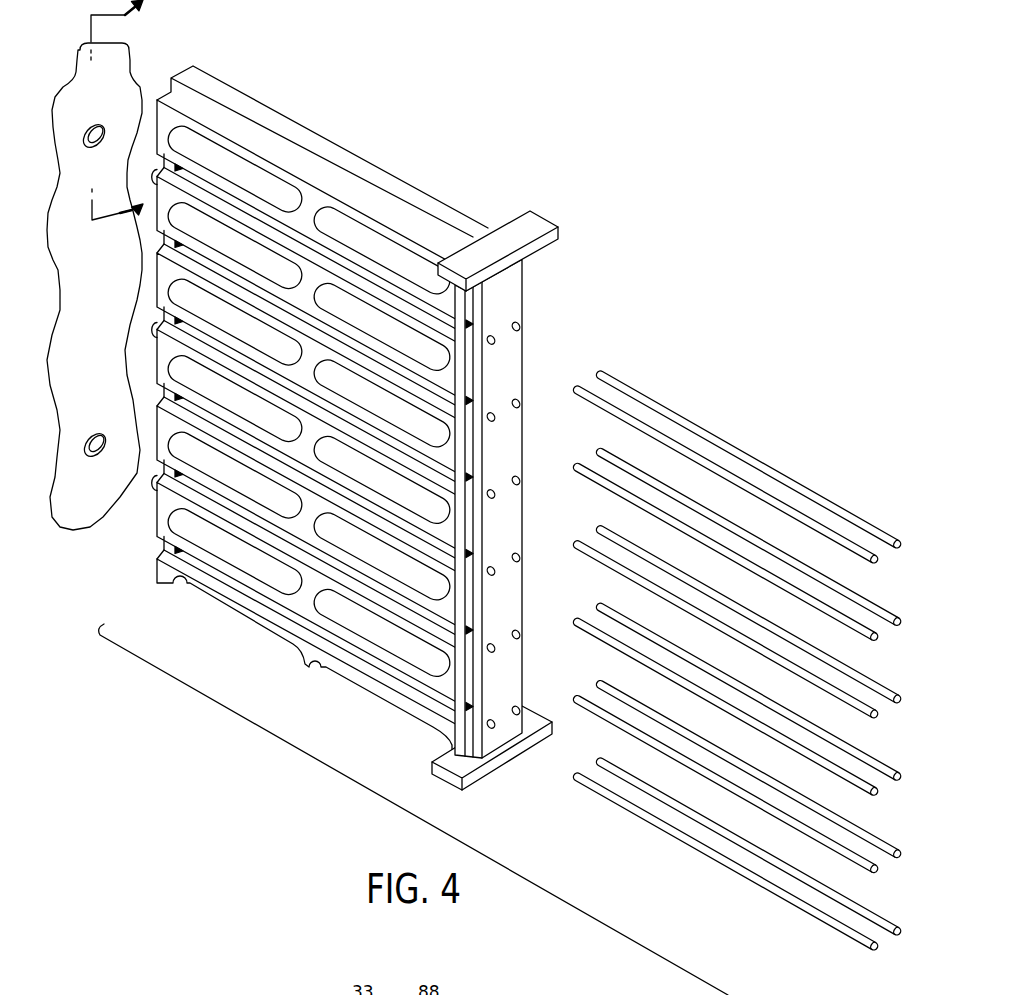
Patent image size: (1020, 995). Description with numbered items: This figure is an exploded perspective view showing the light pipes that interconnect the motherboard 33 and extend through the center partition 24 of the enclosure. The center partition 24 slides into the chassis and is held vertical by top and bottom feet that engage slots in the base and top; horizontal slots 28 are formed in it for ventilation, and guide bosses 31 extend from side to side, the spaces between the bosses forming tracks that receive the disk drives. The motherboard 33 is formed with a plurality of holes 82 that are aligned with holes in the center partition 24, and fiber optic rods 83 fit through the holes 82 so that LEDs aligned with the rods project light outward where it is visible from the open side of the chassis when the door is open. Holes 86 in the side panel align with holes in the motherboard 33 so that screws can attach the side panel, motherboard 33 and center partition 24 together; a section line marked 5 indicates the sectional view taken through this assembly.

The center partition 24 is at (521, 508).
The horizontal slots 28 is at (270, 173).
The guide bosses 31 is at (310, 200).
The motherboard 33 is at (117, 67).
The holes 82 is at (520, 476).
The fiber optic rods 83 is at (683, 500).
The holes 86 is at (95, 462).
The section line 5- 5 is at (126, 126).